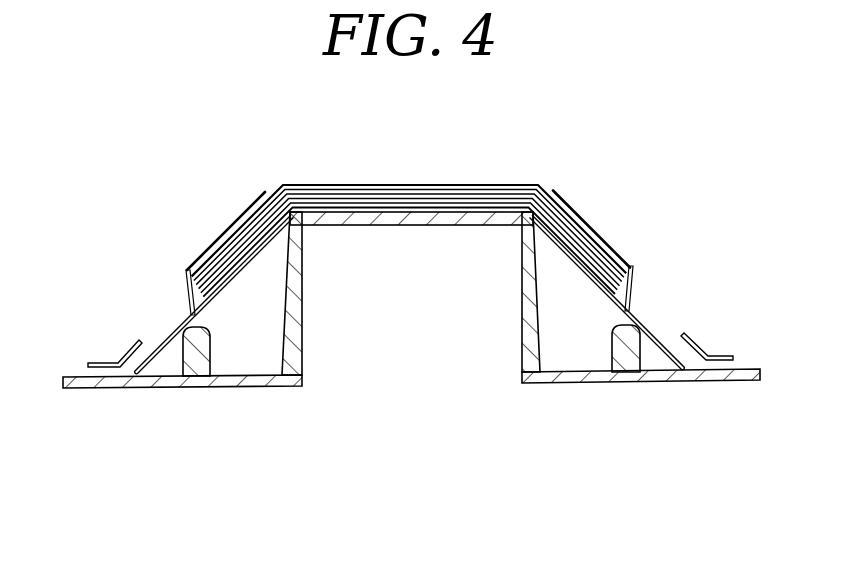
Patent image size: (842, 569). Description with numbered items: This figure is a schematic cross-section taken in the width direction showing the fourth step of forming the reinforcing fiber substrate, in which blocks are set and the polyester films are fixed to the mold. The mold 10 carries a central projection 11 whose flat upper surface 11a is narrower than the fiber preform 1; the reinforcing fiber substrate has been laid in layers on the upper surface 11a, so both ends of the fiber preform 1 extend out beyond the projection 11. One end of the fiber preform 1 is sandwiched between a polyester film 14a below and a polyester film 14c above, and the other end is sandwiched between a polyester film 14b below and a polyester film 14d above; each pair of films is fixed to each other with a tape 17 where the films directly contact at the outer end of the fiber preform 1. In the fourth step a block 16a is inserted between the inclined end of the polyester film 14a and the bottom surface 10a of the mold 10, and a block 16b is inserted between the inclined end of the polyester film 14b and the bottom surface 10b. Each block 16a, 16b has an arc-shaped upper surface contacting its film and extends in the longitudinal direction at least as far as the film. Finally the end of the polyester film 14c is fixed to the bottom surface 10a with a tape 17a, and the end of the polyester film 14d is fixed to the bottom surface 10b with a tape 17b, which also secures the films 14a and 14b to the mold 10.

The fiber preform 1 is at (398, 198).
The mold 10 is at (402, 426).
The bottom surface of the mold 10a is at (228, 375).
The bottom surface of the mold 10b is at (578, 370).
The projection 11 is at (352, 213).
The upper surface of the projection 11a is at (425, 210).
The polyester film 14a is at (230, 287).
The polyester film 14b is at (595, 285).
The polyester film 14c is at (222, 237).
The polyester film 14d is at (610, 238).
The block 16a is at (193, 366).
The block 16b is at (627, 362).
The tape 17 is at (190, 313).
The tape 17a is at (100, 363).
The tape 17b is at (715, 355).